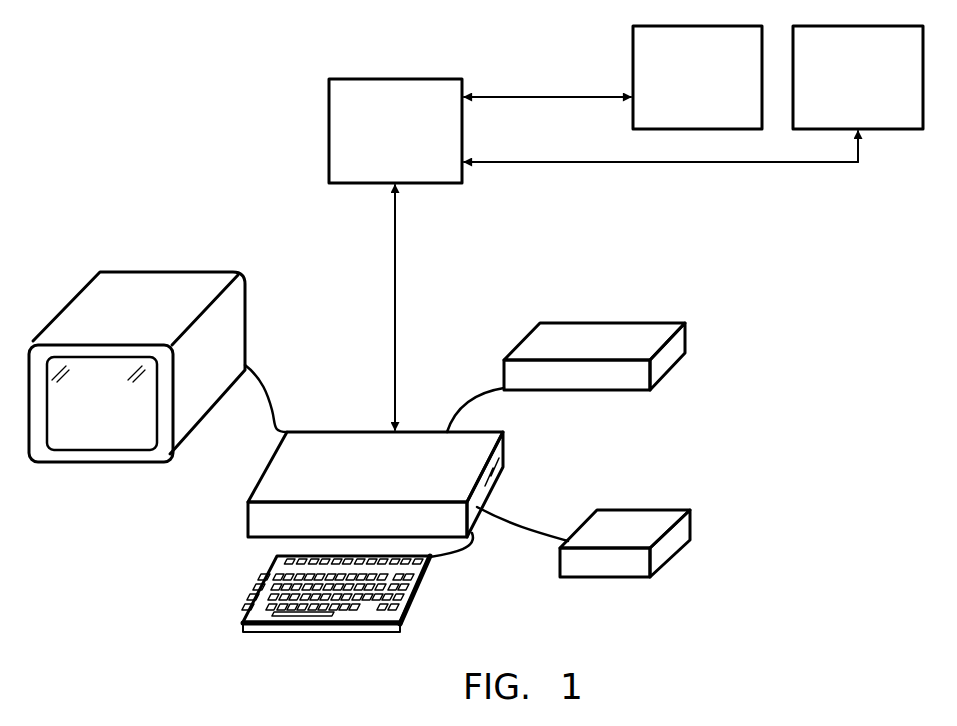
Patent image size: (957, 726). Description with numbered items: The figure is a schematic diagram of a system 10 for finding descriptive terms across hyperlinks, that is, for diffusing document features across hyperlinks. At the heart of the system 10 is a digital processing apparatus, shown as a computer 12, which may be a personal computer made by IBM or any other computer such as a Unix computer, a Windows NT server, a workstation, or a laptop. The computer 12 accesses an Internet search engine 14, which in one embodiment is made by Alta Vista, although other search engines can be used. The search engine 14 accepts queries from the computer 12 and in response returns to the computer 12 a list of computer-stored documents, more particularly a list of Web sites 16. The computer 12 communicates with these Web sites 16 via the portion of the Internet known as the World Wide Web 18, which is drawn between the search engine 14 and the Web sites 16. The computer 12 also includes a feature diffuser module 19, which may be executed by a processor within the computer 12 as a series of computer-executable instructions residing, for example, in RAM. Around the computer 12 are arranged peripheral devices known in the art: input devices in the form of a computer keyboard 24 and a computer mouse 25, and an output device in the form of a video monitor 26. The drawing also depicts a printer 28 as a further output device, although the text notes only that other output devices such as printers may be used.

The system 10 is at (163, 215).
The computer 12 is at (273, 487).
The search engine 14 is at (328, 127).
The Web sites 16 is at (890, 130).
The World Wide Web 18 is at (577, 97).
The feature diffuser module 19 is at (487, 488).
The computer keyboard 24 is at (427, 585).
The computer mouse 25 is at (678, 545).
The video monitor 26 is at (233, 343).
The printer 28 is at (647, 340).